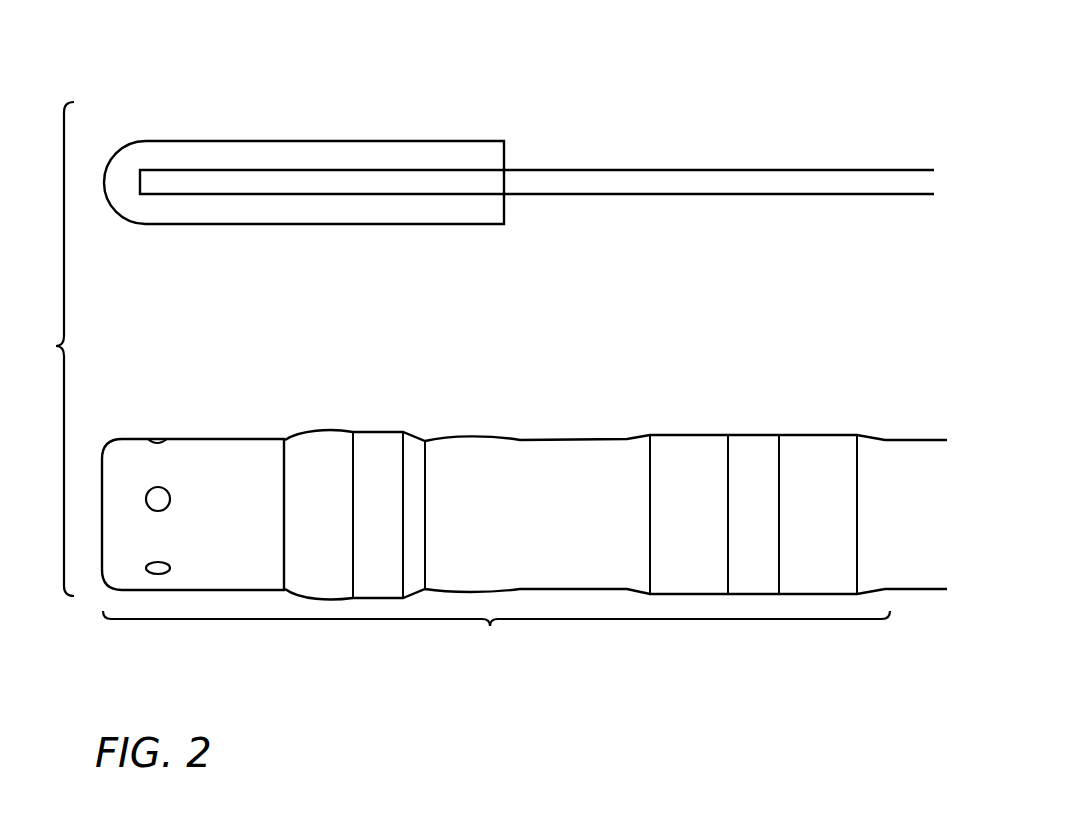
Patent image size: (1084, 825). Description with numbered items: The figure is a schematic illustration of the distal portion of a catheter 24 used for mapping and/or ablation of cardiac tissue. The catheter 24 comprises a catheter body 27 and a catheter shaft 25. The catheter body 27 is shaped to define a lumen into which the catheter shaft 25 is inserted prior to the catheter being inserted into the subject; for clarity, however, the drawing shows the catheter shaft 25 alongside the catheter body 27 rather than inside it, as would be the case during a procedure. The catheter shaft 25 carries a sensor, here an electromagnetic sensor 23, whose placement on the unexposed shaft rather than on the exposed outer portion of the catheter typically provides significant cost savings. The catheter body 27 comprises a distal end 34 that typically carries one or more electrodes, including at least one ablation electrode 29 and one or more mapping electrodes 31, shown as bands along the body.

The electromagnetic sensor 23 is at (346, 141).
The catheter 24 is at (52, 349).
The catheter shaft 25 is at (190, 88).
The catheter body 27 is at (188, 374).
The ablation electrode 29 is at (242, 439).
The mapping electrodes 31 is at (376, 432).
The distal end 34 is at (496, 636).